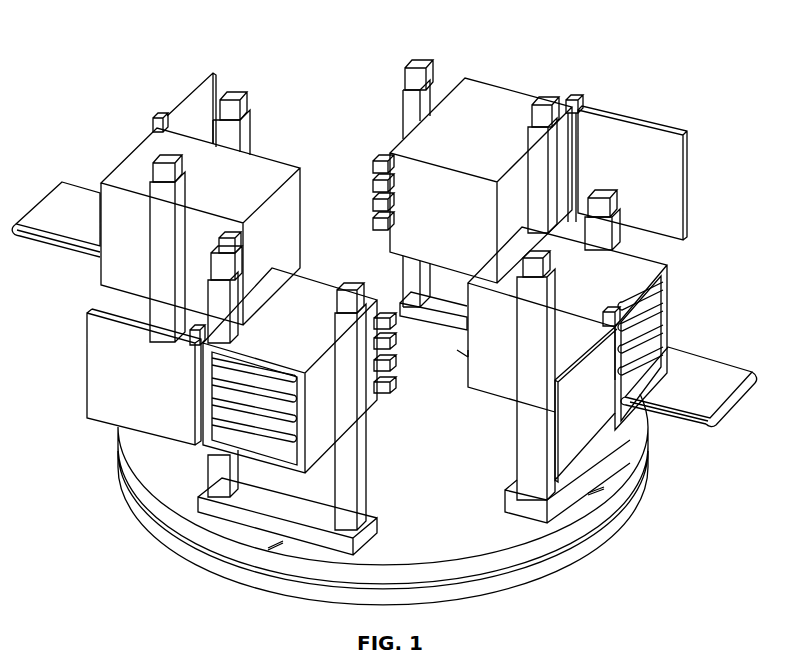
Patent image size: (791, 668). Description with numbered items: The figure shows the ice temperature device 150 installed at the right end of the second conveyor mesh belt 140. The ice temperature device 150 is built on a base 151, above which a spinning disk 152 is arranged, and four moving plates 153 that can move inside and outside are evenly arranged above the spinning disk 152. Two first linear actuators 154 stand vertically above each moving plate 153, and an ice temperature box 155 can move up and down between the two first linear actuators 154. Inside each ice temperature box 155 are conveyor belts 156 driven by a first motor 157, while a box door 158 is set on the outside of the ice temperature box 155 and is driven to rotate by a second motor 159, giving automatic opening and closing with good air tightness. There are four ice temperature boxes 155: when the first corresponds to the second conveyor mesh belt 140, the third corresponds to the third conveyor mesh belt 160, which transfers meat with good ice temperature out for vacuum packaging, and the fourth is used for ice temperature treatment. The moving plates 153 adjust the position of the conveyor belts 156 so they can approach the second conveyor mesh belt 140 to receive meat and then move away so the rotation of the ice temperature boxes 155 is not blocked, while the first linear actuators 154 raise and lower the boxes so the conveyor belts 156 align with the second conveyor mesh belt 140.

The second conveyor mesh belt 140 is at (88, 192).
The ice temperature device 150 is at (370, 62).
The base 151 is at (615, 530).
The spinning disk 152 is at (612, 510).
The moving plate 153 is at (607, 460).
The first linear actuator 154 is at (250, 127).
The ice temperature box 155 is at (260, 162).
The conveyor belt 156 is at (297, 440).
The first motor 157 is at (238, 237).
The box door 158 is at (188, 105).
The second motor 159 is at (152, 118).
The third conveyor mesh belt 160 is at (687, 360).